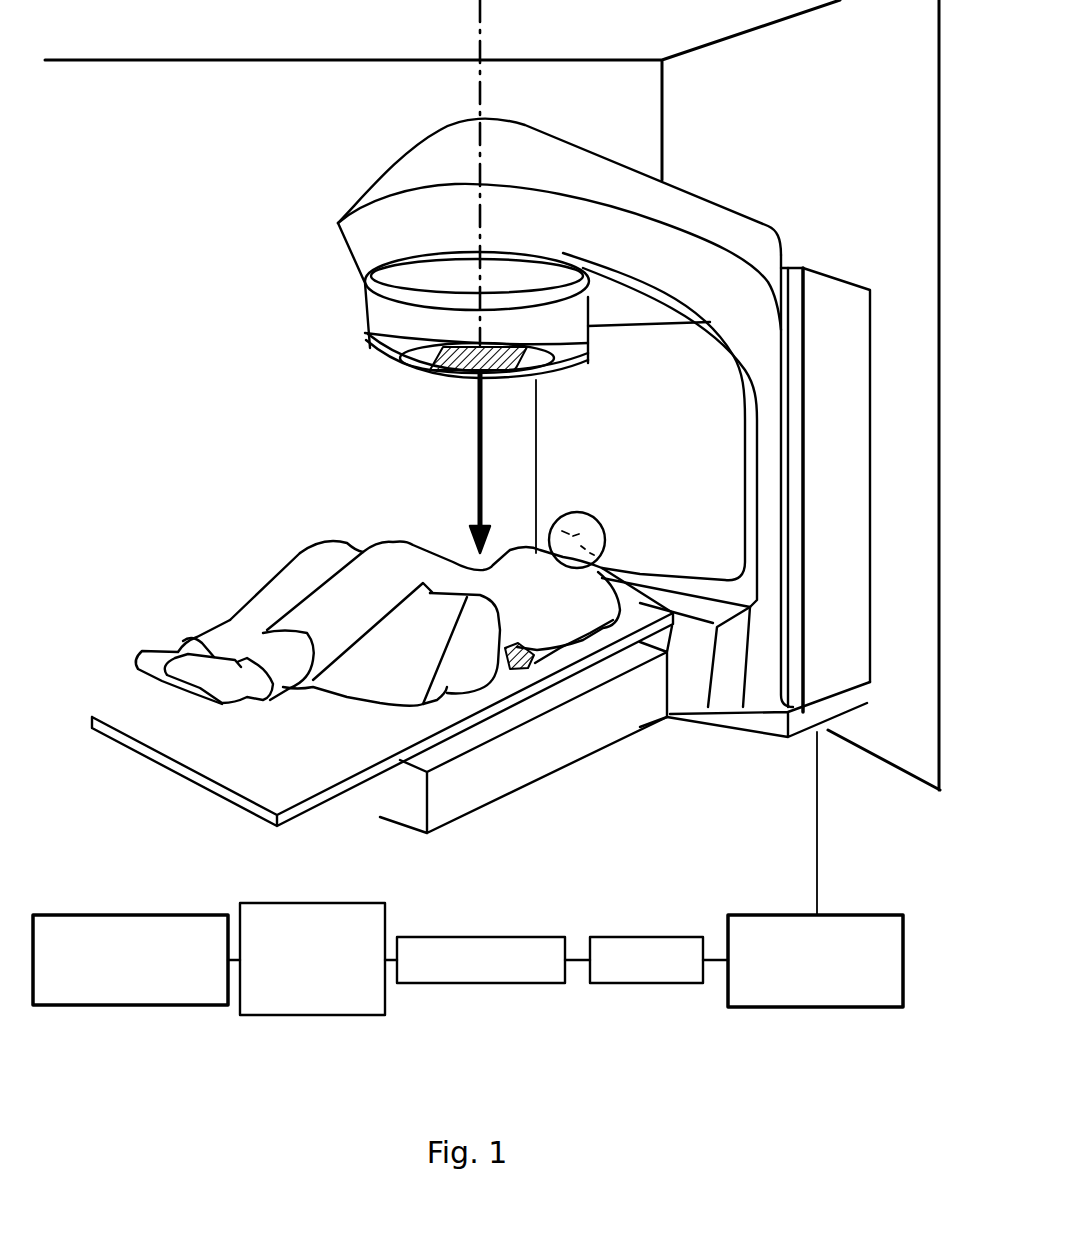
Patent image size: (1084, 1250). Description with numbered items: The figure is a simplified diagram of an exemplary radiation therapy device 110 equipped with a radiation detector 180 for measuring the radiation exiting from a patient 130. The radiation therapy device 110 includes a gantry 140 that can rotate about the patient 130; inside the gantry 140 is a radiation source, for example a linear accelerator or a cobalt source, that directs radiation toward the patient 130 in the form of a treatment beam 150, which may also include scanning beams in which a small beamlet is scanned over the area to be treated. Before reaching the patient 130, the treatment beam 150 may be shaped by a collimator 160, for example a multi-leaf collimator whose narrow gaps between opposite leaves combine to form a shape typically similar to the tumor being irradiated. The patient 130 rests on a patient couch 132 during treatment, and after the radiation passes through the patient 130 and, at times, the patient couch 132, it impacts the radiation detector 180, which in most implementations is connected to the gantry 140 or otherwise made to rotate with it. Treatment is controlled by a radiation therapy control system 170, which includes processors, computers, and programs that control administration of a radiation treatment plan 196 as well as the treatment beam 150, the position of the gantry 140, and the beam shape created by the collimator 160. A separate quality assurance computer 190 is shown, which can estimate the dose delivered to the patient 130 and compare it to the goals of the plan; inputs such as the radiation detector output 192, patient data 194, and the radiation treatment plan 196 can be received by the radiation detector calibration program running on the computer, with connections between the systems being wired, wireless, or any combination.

The radiation therapy device 110 is at (743, 198).
The patient 130 is at (297, 553).
The patient couch 132 is at (160, 762).
The gantry 140 is at (380, 162).
The treatment beam 150 is at (476, 500).
The collimator 160 is at (445, 378).
The radiation therapy control system 170 is at (852, 1007).
The radiation detector 180 is at (575, 763).
The quality assurance (QA) computer 190 is at (120, 1005).
The radiation detector output 192 is at (312, 1015).
The patient data 194 is at (481, 983).
The radiation treatment plan 196 is at (647, 983).